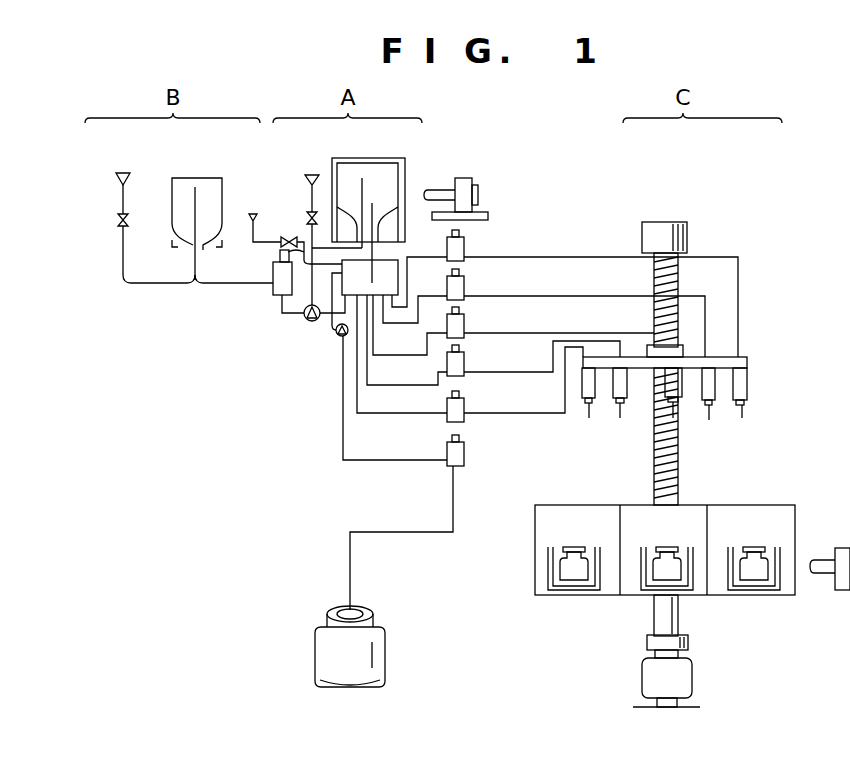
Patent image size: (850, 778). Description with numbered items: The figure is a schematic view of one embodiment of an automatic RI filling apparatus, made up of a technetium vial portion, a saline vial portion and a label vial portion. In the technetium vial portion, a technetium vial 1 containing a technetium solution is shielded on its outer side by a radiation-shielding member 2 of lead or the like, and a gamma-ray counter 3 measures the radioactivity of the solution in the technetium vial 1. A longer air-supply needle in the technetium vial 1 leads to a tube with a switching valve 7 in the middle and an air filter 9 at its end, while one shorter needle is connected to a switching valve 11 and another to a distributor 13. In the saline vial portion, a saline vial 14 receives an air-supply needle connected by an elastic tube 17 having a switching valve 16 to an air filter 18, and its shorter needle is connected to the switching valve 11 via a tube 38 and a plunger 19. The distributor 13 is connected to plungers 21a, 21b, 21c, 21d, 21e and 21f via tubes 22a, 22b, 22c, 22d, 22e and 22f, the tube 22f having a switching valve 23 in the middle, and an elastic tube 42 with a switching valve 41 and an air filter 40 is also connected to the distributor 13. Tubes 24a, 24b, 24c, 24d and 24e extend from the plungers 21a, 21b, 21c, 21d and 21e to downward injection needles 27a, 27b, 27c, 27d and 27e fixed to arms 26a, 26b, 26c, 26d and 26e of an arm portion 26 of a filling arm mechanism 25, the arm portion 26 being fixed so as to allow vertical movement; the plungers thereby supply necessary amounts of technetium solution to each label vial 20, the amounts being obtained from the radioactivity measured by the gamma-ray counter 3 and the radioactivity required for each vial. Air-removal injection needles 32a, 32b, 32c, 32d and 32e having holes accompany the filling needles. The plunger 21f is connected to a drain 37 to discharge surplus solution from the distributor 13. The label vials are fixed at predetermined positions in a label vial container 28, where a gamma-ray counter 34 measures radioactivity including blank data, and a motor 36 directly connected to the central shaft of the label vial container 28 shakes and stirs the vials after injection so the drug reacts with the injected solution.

The technetium vial 1 is at (340, 163).
The radiation-shielding member 2 is at (406, 160).
The gamma-ray counter 3 is at (472, 182).
The switching valve 7 is at (307, 218).
The air filter 9 is at (307, 177).
The switching valve 11 is at (311, 321).
The distributor 13 is at (400, 260).
The saline vial 14 is at (197, 210).
The switching valve 16 is at (118, 226).
The elastic tube 17 is at (137, 287).
The air filter 18 is at (125, 163).
The plunger 19 is at (273, 295).
The label vial 20 is at (568, 547).
The plunger 21a is at (466, 246).
The plunger 21b is at (466, 290).
The plunger 21c is at (466, 328).
The plunger 21d is at (466, 366).
The plunger 21e is at (465, 408).
The plunger 21f is at (447, 466).
The tube 22a is at (408, 266).
The tube 22b is at (396, 324).
The tube 22c is at (394, 356).
The tube 22d is at (398, 386).
The tube 22e is at (395, 414).
The tube 22f is at (417, 533).
The switching valve 23 is at (341, 337).
The tube 24a is at (592, 257).
The tube 24b is at (592, 296).
The tube 24c is at (597, 333).
The tube 24d is at (541, 373).
The tube 24e is at (500, 414).
The filling arm mechanism 25 is at (688, 240).
The arm portion 26 is at (748, 362).
The arm 26a is at (748, 390).
The arm 26b is at (703, 388).
The arm 26c is at (675, 370).
The arm 26d is at (613, 387).
The arm 26e is at (582, 383).
The injection needle 27a is at (745, 406).
The injection needle 27b is at (709, 406).
The injection needle 27c is at (684, 400).
The injection needle 27d is at (625, 419).
The injection needle 27e is at (590, 419).
The label vial container 28 is at (550, 604).
The injection needle 32a is at (743, 419).
The injection needle 32b is at (711, 421).
The injection needle 32c is at (682, 396).
The nozzle tip 32d is at (624, 404).
The injection needle 32e is at (587, 404).
The gamma-ray counter 34 is at (828, 548).
The motor 36 is at (694, 672).
The drain 37 is at (347, 690).
The tube 38 is at (209, 287).
The air filter 40 is at (255, 213).
The switching valve 41 is at (281, 245).
The elastic tube 42 is at (280, 252).